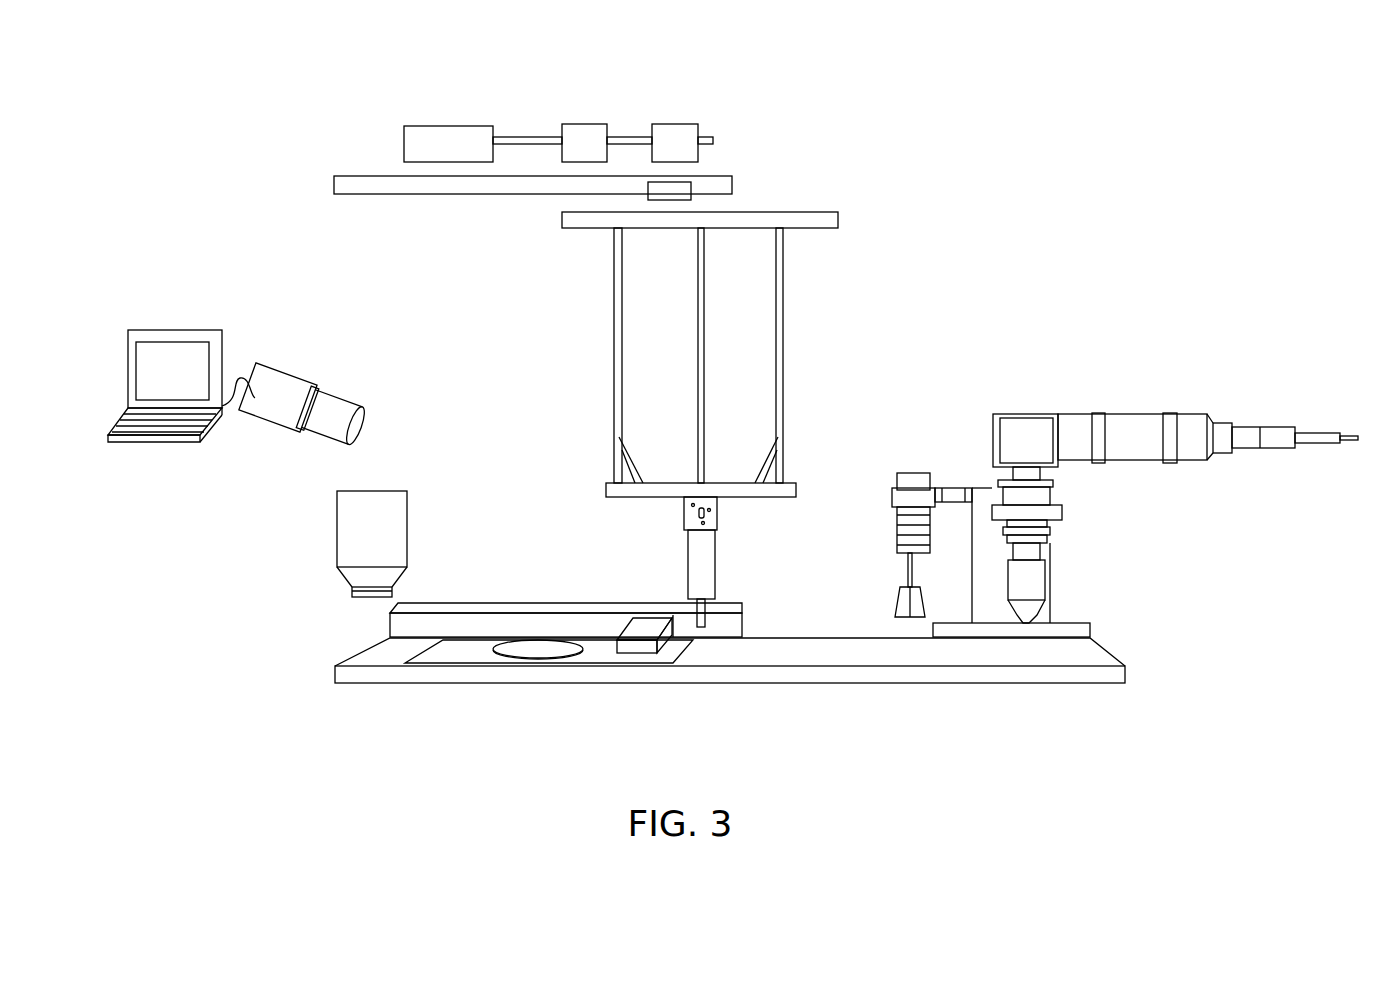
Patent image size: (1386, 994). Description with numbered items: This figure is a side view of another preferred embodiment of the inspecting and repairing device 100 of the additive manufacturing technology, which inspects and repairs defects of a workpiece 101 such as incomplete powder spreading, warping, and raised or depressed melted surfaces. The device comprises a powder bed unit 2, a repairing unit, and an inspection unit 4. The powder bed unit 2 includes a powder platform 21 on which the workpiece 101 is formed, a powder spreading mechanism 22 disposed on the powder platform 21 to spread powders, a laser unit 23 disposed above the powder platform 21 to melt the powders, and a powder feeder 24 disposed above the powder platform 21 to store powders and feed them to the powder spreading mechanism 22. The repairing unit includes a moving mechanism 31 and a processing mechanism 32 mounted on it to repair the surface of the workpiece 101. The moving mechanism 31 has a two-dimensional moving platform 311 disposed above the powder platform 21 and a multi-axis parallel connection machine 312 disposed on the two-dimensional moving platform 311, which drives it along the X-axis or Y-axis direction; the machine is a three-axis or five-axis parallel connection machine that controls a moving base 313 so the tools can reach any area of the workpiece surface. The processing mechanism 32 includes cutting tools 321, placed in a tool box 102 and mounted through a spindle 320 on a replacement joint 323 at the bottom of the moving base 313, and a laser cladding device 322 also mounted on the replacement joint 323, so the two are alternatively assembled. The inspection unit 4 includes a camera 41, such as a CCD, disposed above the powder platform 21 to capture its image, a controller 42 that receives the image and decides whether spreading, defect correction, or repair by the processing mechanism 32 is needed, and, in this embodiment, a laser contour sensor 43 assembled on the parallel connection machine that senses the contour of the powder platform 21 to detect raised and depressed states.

The inspecting and repairing device 100 is at (205, 93).
The powder bed unit 2 is at (285, 600).
The powder platform 21 is at (400, 662).
The powder spreading mechanism 22 is at (548, 603).
The laser unit 23 is at (448, 134).
The powder feeder 24 is at (390, 505).
The moving mechanism 31 is at (795, 82).
The two-dimensional moving platform 311 is at (707, 176).
The multi-axis parallel connection machine 312 is at (800, 217).
The moving base 313 is at (797, 487).
The processing mechanism 32 is at (805, 762).
The spindle 320 is at (710, 570).
The cutting tools 321 is at (705, 620).
The laser cladding device 322 is at (1007, 580).
The replacement joint 323 is at (686, 515).
The inspection unit 4 is at (290, 246).
The camera 41 is at (293, 375).
The controller 42 is at (200, 337).
The laser contour sensor 43 is at (912, 473).
The workpiece 101 is at (542, 655).
The tool box 102 is at (992, 490).